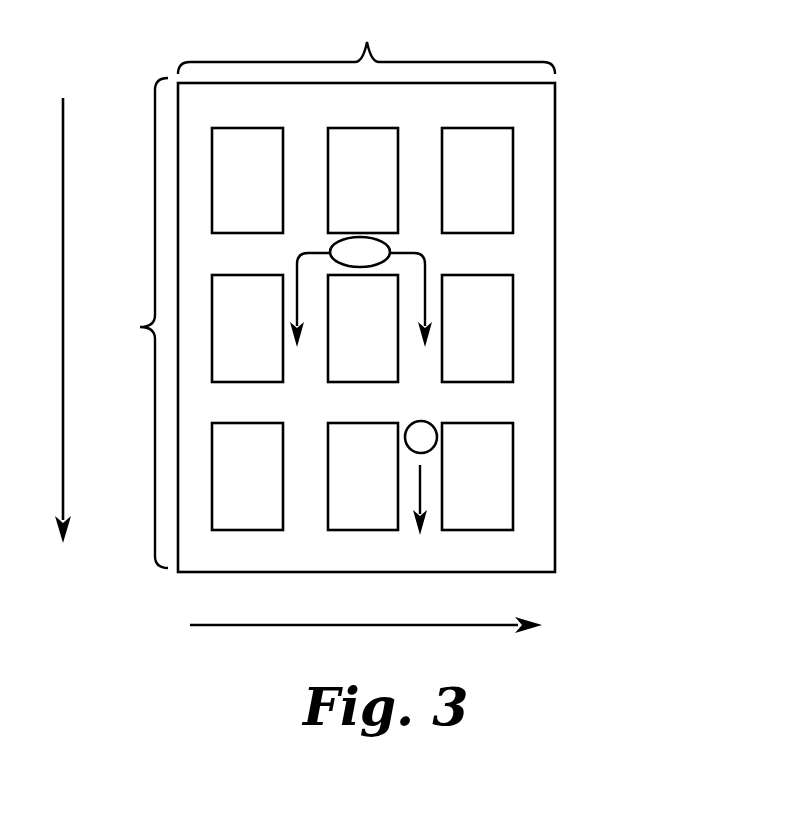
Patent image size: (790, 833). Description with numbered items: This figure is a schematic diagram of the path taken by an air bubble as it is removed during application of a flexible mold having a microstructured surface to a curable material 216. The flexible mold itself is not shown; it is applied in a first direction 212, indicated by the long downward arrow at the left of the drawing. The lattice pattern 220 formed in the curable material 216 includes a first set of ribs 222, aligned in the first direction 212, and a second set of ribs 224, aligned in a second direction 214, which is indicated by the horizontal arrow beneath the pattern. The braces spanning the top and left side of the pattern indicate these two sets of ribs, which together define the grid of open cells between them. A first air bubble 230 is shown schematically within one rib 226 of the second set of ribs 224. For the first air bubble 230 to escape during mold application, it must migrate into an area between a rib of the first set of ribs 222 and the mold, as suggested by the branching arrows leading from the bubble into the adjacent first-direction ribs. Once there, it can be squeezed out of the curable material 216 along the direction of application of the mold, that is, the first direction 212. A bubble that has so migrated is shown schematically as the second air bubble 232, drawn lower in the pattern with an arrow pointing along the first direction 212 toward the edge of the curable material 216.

The first direction 212 is at (63, 145).
The second direction 214 is at (228, 628).
The curable material 216 is at (533, 547).
The lattice pattern 220 is at (595, 114).
The first set of ribs 222 is at (366, 41).
The second set of ribs 224 is at (125, 323).
The rib 226 is at (542, 263).
The first air bubble 230 is at (372, 247).
The second air bubble 232 is at (428, 428).